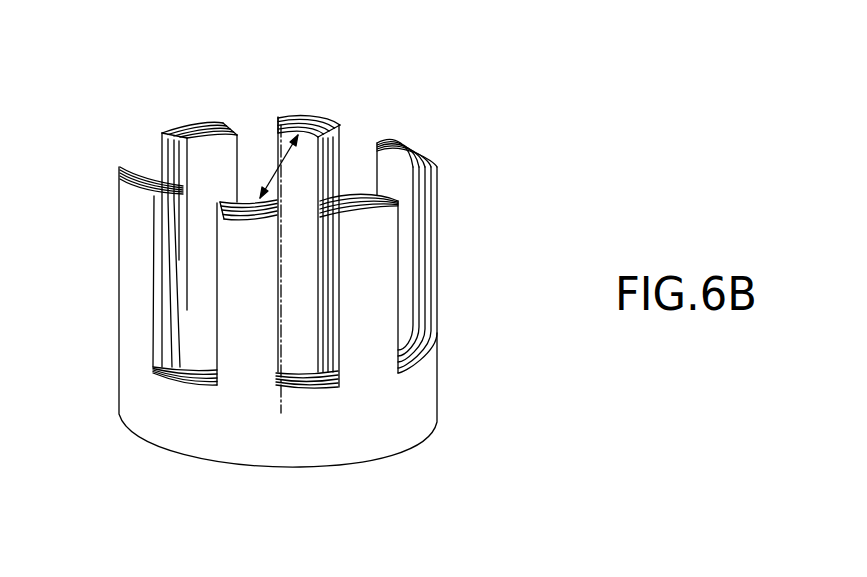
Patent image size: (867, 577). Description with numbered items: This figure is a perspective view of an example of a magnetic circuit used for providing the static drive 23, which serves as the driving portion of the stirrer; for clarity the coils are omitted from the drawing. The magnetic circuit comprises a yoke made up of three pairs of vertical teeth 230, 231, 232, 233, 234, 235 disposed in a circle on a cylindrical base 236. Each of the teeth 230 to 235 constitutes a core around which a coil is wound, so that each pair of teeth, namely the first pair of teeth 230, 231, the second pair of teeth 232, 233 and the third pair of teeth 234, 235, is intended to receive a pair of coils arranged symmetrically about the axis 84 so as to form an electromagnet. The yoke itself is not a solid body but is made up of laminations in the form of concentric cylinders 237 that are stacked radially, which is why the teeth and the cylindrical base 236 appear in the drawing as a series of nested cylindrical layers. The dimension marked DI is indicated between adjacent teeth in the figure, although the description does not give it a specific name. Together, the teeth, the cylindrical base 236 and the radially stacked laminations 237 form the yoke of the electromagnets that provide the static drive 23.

The static drive 23 is at (508, 402).
The vertical tooth 230 is at (215, 122).
The vertical tooth 231 is at (380, 313).
The vertical tooth 232 is at (327, 120).
The vertical tooth 233 is at (247, 345).
The vertical tooth 234 is at (417, 155).
The vertical tooth 235 is at (132, 168).
The cylindrical base 236 is at (373, 437).
The laminations in the form of concentric cylinders 237 is at (308, 113).
The axis 84 is at (287, 312).
The inner diameter dimension DI is at (274, 166).